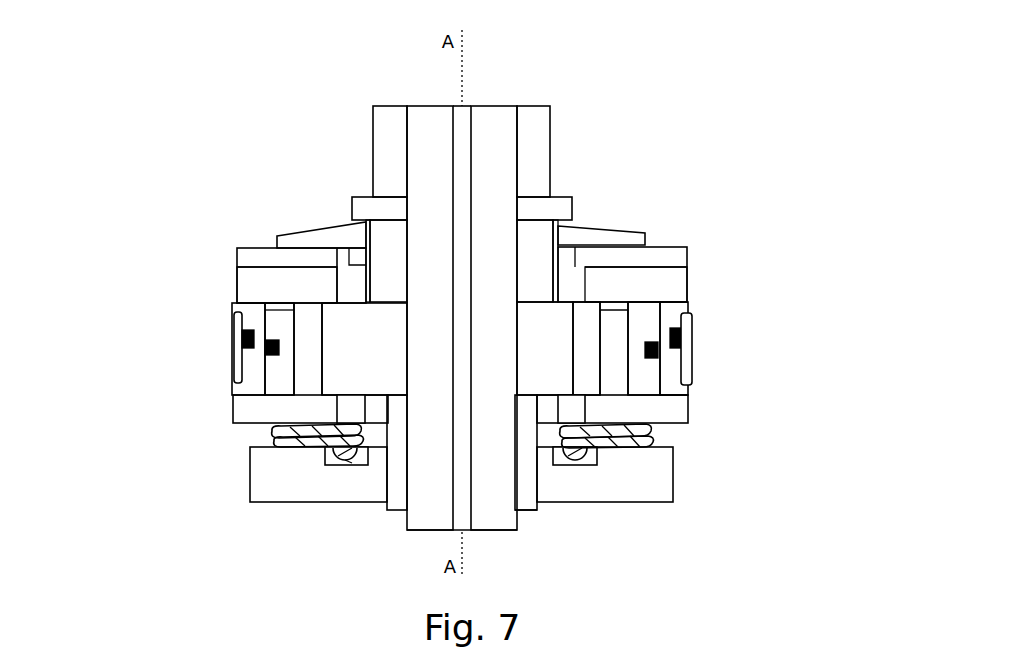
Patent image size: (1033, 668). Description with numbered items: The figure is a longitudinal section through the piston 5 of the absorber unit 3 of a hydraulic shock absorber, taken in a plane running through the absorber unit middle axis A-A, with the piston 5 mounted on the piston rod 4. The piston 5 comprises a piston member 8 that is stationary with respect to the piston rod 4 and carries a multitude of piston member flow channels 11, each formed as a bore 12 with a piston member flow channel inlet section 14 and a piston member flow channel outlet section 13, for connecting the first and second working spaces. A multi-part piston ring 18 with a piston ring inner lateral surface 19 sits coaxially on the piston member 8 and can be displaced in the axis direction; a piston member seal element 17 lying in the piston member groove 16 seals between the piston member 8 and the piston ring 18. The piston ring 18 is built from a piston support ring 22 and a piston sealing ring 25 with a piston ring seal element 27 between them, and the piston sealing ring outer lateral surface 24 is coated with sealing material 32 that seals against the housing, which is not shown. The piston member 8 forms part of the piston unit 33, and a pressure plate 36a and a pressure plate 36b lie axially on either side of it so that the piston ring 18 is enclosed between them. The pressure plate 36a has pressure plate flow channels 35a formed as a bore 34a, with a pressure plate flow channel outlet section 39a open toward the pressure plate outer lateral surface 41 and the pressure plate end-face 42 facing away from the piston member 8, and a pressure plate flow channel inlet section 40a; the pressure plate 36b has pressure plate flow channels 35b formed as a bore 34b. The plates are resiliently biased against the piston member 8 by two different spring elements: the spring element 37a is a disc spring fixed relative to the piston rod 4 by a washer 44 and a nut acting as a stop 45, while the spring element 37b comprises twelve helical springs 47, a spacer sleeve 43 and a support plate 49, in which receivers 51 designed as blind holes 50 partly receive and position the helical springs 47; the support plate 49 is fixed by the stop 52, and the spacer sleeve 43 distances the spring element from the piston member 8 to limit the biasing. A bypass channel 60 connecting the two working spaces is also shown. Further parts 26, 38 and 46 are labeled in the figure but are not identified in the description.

The absorber unit 3 is at (868, 70).
The piston rod 4 is at (493, 152).
The piston 5 is at (60, 90).
The piston member 8 is at (718, 367).
The piston member flow channels 11 is at (304, 348).
The bore 12 is at (672, 407).
The piston member flow channel outlet section 13 is at (613, 402).
The piston member flow channel inlet section 14 is at (643, 298).
The piston member groove 16 is at (617, 378).
The piston member seal element 17 is at (650, 360).
The piston ring 18 is at (728, 340).
The piston ring inner lateral surface 19 is at (270, 372).
The piston support ring 22 is at (226, 389).
The piston sealing ring outer lateral surface 24 is at (698, 336).
The piston sealing ring 25 is at (226, 318).
The hub flange 26 is at (269, 332).
The piston ring seal element 27 is at (264, 343).
The sealing material 32 is at (230, 347).
The piston unit 33 is at (832, 362).
The bore 34a is at (337, 269).
The bore 34b is at (358, 465).
The pressure plate flow channels 35a is at (351, 283).
The pressure plate flow channels 35b is at (325, 449).
The pressure plate 36a is at (229, 268).
The pressure plate 36b is at (233, 425).
The spring element 37a is at (620, 219).
The spring element 37b is at (202, 507).
The bearing ring 38 is at (678, 298).
The pressure plate flow channel outlet section 39a is at (662, 258).
The pressure plate flow channel inlet section 40a is at (573, 310).
The pressure plate outer lateral surface 41 is at (229, 277).
The pressure plate end-face 42 is at (243, 238).
The spacer sleeve 43 is at (537, 205).
The washer 44 is at (380, 208).
The stop 45 is at (534, 254).
The sleeve 46 is at (388, 128).
The helical springs 47 is at (658, 492).
The support plate 49 is at (672, 402).
The blind holes 50 is at (332, 470).
The receivers 51 is at (319, 441).
The stop 52 is at (522, 505).
The bypass channel 60 is at (458, 520).